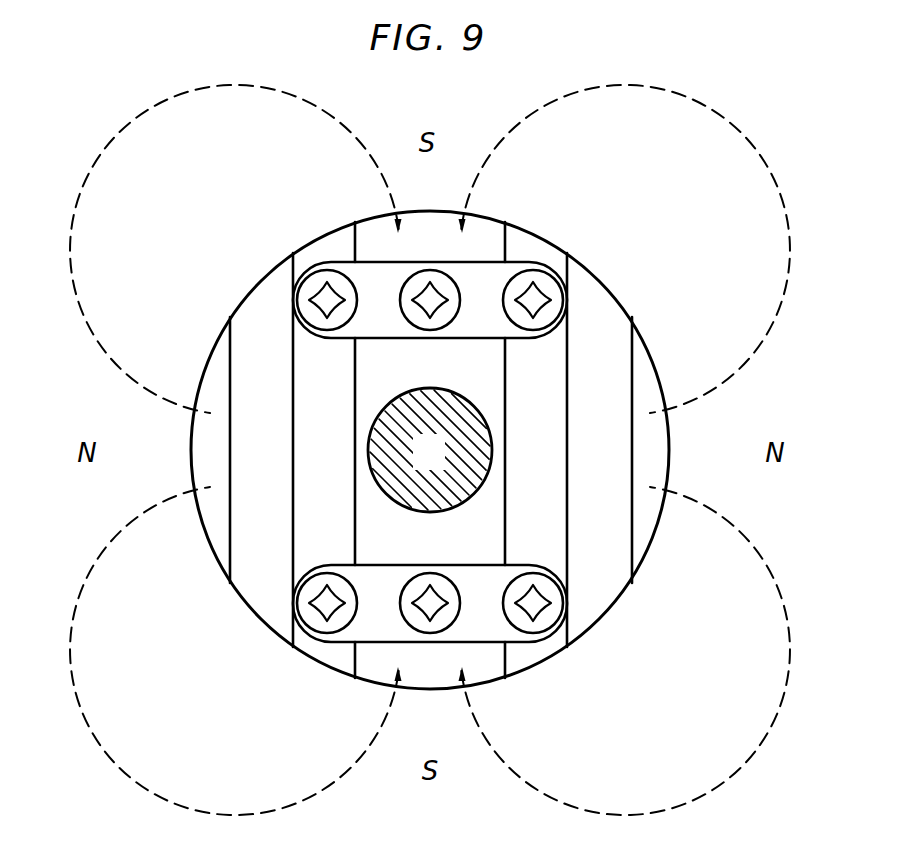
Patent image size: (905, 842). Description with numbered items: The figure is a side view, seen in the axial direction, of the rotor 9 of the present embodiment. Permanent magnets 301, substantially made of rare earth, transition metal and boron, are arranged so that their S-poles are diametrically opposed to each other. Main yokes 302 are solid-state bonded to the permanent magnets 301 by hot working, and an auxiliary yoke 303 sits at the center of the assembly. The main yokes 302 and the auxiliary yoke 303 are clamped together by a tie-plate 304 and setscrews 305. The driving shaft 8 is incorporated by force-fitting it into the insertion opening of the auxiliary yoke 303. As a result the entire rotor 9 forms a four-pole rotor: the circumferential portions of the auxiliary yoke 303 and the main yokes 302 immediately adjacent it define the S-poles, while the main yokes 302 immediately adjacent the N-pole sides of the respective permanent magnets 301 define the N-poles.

The driving shaft 8 is at (441, 466).
The rotor 9 is at (642, 593).
The permanent magnets 301 is at (258, 305).
The main yokes 302 is at (217, 537).
The auxiliary yoke 303 is at (447, 248).
The tie-plate 304 is at (388, 272).
The setscrews 305 is at (543, 280).